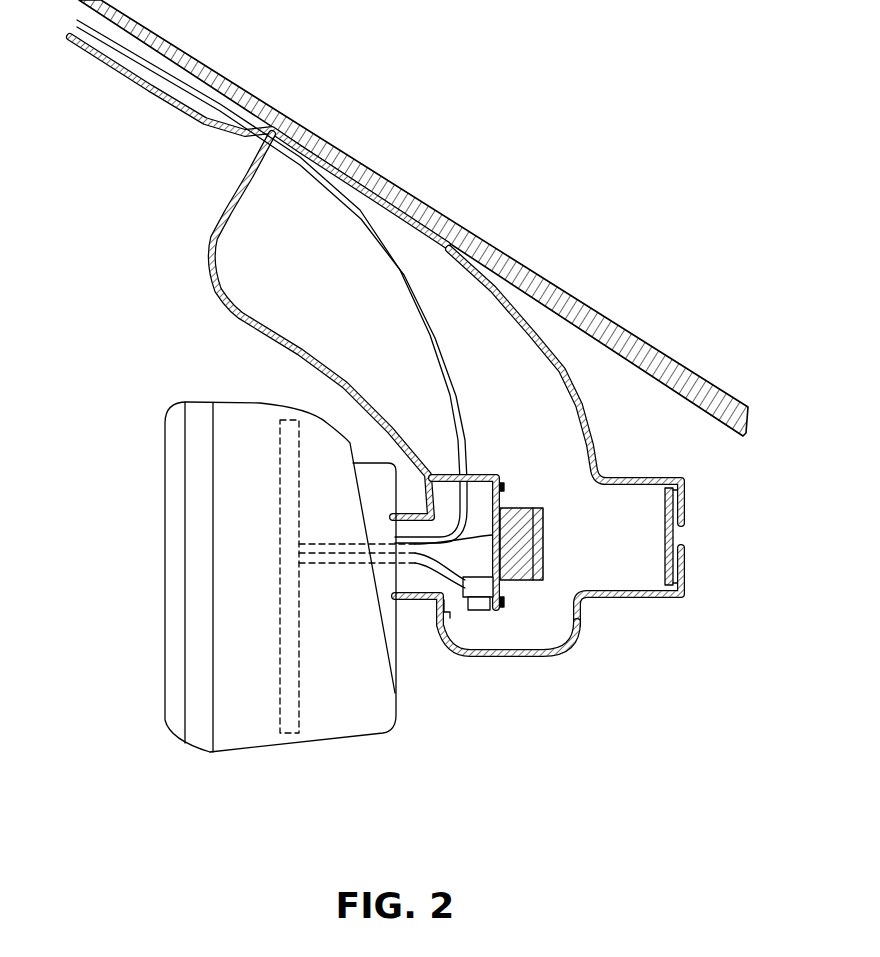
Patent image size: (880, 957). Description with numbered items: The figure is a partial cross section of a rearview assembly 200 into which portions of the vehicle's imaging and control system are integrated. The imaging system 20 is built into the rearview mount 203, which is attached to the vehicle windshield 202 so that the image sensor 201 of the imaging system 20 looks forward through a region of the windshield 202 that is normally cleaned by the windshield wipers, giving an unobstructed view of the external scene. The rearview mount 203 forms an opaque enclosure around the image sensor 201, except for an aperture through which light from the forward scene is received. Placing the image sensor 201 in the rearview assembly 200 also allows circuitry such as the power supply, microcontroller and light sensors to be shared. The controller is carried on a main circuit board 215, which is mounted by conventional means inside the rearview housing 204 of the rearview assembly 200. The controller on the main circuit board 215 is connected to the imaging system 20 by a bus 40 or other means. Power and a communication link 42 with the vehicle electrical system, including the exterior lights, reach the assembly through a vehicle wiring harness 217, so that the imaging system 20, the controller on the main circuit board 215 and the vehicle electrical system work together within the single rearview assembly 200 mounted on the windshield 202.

The imaging system 20 is at (540, 597).
The bus 40 is at (413, 599).
The communication link 42 is at (448, 413).
The rearview assembly 200 is at (205, 765).
The image sensor 201 is at (490, 540).
The windshield 202 is at (486, 216).
The rearview mount 203 is at (243, 233).
The rearview housing 204 is at (162, 648).
The main circuit board 215 is at (300, 677).
The vehicle wiring harness 217 is at (430, 357).